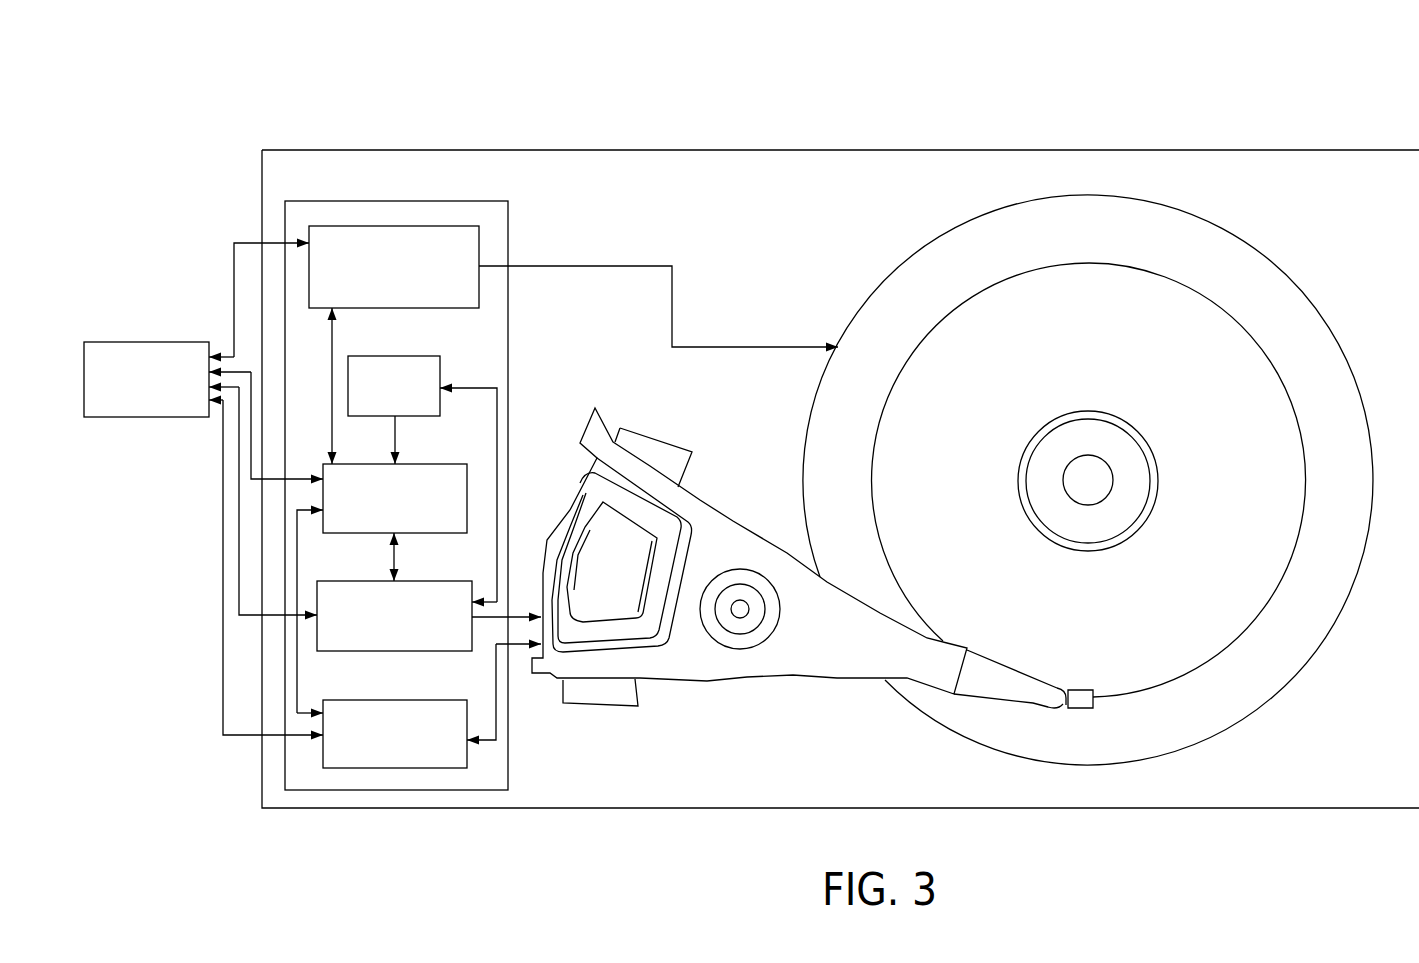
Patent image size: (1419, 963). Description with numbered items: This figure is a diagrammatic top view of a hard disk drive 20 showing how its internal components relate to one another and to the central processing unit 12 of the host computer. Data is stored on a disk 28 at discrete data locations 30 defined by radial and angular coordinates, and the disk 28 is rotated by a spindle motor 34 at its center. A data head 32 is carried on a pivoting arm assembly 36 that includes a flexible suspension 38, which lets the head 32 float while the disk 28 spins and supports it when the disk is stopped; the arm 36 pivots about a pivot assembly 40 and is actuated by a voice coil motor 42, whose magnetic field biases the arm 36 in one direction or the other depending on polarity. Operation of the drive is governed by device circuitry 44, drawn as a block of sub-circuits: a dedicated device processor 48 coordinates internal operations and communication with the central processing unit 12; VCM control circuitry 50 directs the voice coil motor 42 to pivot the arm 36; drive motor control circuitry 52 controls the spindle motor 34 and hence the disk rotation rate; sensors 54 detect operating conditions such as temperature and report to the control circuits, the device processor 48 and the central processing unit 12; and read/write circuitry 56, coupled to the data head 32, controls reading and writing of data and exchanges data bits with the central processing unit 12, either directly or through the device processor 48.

The disk drive 20 is at (1051, 116).
The central processing unit 12 is at (150, 420).
The device circuitry 44 is at (534, 228).
The drive motor control circuitry 52 is at (383, 226).
The sensors 54 is at (410, 356).
The device processor 48 is at (413, 464).
The VCM control circuitry 50 is at (418, 581).
The read/write circuitry 56 is at (392, 768).
The disk 28 is at (1183, 229).
The spindle motor 34 is at (1133, 472).
The arm assembly 36 is at (785, 690).
The pivot assembly 40 is at (742, 627).
The voice coil motor 42 is at (580, 697).
The flexible suspension 38 is at (993, 668).
The data head 32 is at (1063, 687).
The data location 30 is at (1090, 703).